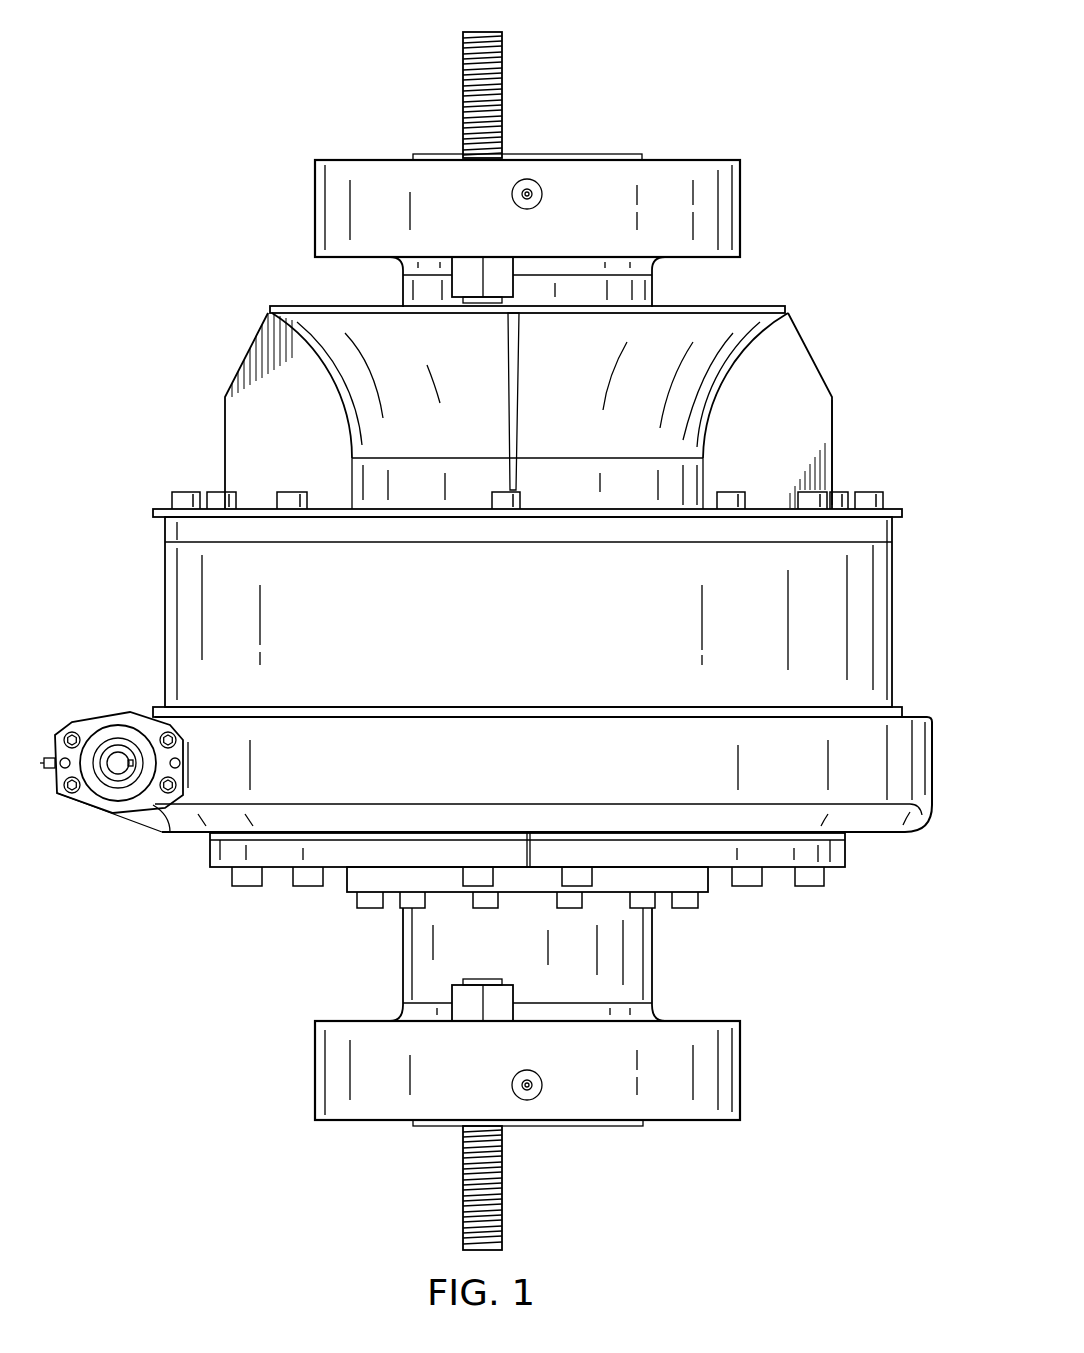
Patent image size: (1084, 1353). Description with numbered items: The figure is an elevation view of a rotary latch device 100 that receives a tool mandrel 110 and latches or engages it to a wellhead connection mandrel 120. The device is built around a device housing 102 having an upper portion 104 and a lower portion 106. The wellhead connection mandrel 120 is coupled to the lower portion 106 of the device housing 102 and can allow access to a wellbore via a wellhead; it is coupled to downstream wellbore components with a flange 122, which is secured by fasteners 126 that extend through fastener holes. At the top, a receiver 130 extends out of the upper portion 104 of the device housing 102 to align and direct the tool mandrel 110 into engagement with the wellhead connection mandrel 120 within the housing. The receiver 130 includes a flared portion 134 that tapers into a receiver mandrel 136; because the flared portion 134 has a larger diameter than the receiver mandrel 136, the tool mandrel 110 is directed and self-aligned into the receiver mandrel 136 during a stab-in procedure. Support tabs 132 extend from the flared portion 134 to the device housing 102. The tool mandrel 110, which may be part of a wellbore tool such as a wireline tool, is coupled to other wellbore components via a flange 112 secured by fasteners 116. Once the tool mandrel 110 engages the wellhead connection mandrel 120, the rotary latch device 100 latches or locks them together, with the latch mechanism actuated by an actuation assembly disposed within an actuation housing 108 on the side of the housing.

The rotary latch device 100 is at (774, 56).
The device housing 102 is at (890, 625).
The upper portion 104 is at (172, 600).
The lower portion 106 is at (883, 818).
The actuation housing 108 is at (118, 760).
The tool mandrel 110 is at (653, 293).
The flange 112 is at (742, 208).
The fasteners 116 is at (463, 78).
The wellhead connection mandrel 120 is at (653, 953).
The flange 122 is at (683, 1115).
The fasteners 126 is at (463, 1190).
The receiver 130 is at (706, 373).
The support tabs 132 is at (833, 433).
The flared portion 134 is at (296, 306).
The receiver mandrel 136 is at (367, 478).